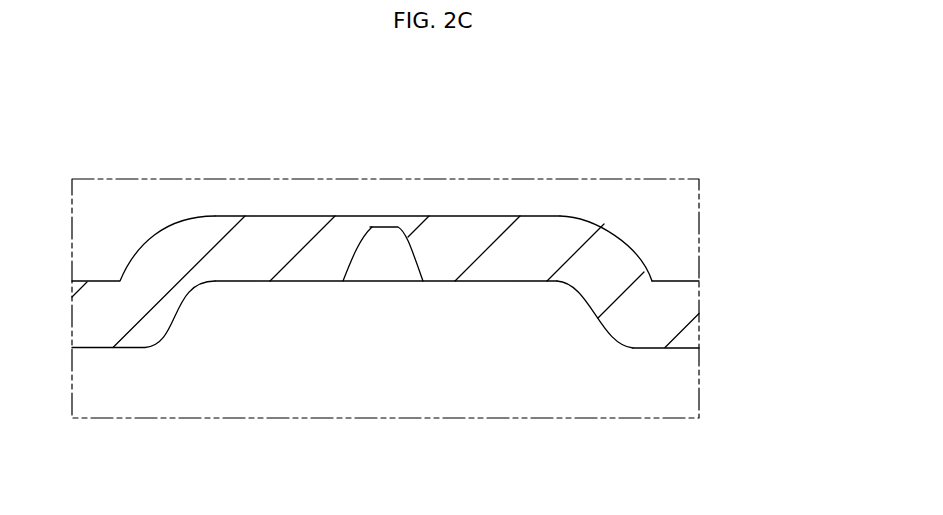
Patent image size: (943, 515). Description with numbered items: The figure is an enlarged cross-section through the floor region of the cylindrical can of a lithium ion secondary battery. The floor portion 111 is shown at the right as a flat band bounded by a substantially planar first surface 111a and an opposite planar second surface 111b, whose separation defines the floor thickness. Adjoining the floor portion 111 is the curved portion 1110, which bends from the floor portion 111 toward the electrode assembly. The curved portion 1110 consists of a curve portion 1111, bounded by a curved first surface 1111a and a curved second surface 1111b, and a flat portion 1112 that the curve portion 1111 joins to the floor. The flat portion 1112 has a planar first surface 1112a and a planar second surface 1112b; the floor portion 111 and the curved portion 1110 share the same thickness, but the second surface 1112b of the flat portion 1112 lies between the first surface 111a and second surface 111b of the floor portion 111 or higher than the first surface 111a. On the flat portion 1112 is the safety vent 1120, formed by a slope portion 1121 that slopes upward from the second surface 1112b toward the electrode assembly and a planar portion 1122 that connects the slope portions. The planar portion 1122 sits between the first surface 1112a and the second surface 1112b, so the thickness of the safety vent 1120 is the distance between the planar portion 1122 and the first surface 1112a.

The floor portion 111 is at (716, 314).
The first surface 111a is at (673, 281).
The second surface 111b is at (673, 348).
The curved portion 1110 is at (435, 299).
The curve portion 1111 is at (674, 305).
The first surface 1111a is at (605, 227).
The second surface 1111b is at (594, 317).
The flat portion 1112 is at (409, 305).
The first surface 1112a is at (426, 217).
The second surface 1112b is at (486, 283).
The safety vent 1120 is at (363, 305).
The slope portion 1121 is at (357, 255).
The planar portion 1122 is at (371, 227).